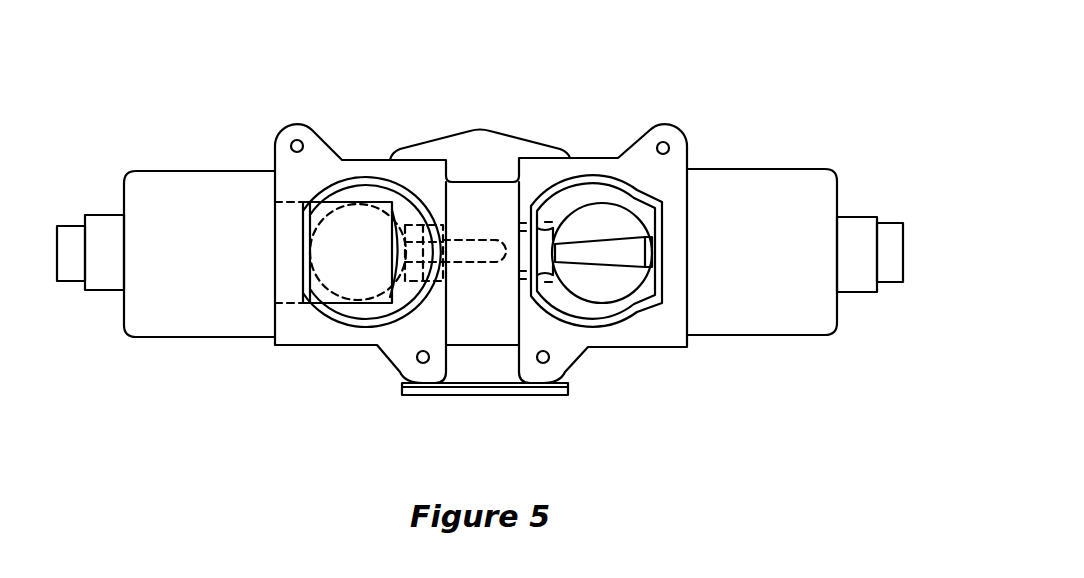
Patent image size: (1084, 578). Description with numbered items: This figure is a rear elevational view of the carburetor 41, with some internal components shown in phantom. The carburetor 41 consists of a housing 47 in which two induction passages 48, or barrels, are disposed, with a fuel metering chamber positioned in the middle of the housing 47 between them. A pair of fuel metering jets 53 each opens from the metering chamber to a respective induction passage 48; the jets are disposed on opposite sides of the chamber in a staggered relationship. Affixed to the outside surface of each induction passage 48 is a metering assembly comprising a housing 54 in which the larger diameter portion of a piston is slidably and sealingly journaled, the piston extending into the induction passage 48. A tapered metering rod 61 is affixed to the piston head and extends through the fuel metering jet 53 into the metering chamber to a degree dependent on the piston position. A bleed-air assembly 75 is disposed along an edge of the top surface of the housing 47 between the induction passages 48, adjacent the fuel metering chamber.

The carburetor 41 is at (551, 108).
The housing 47 is at (470, 372).
The induction passage 48 is at (358, 198).
The fuel metering jet 53 is at (568, 268).
The metering assembly housing 54 is at (185, 171).
The tapered metering rod 61 is at (466, 240).
The bleed-air assembly 75 is at (500, 125).